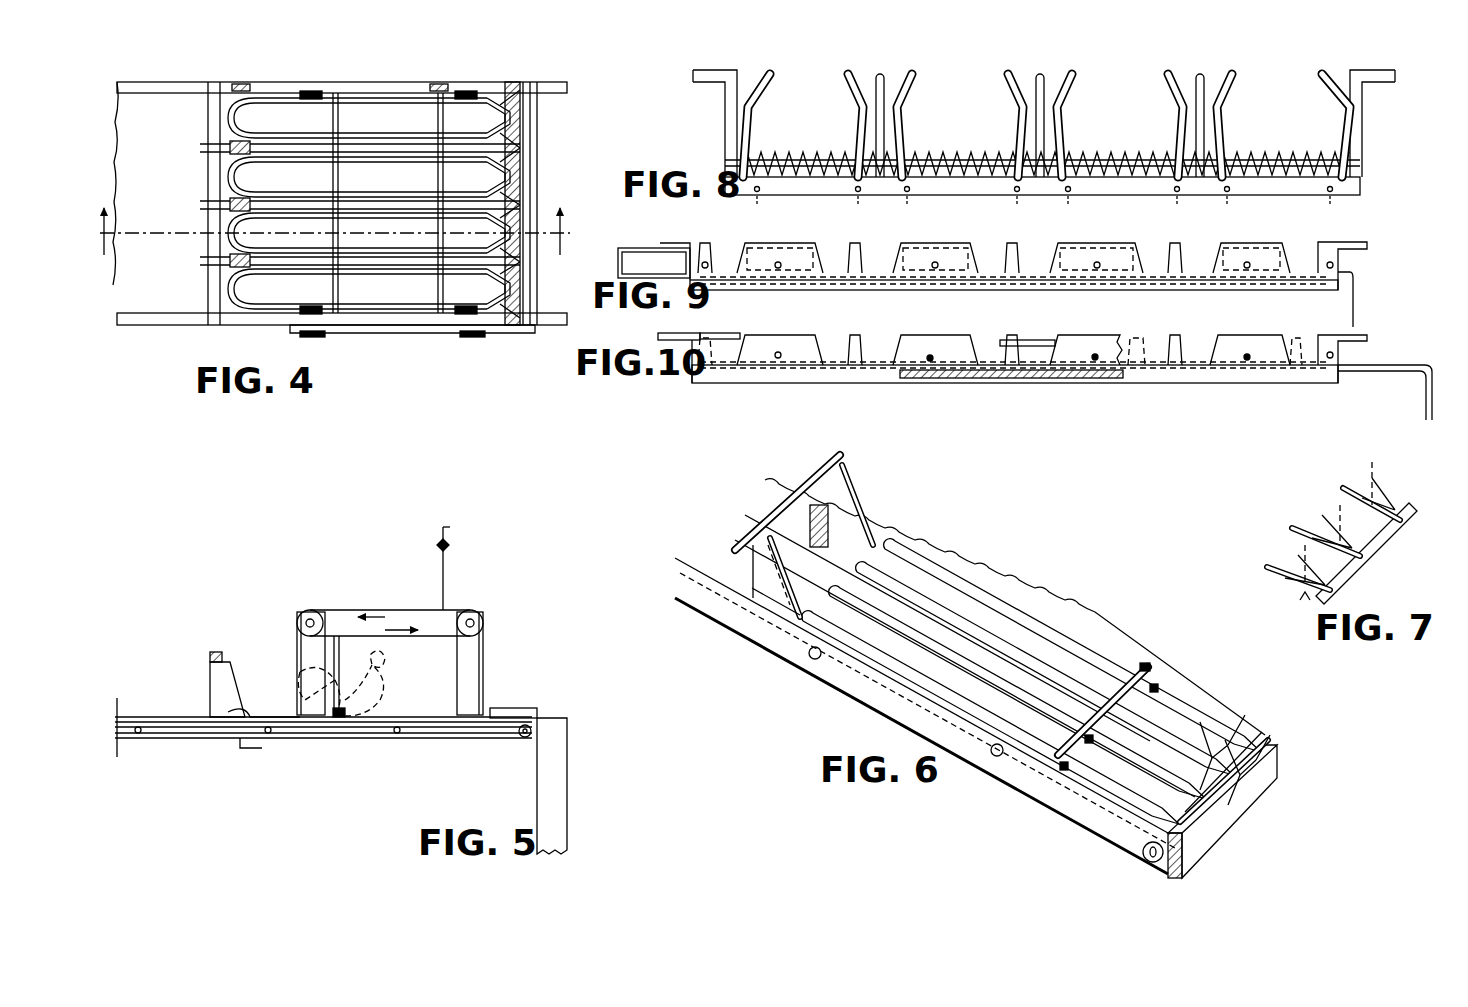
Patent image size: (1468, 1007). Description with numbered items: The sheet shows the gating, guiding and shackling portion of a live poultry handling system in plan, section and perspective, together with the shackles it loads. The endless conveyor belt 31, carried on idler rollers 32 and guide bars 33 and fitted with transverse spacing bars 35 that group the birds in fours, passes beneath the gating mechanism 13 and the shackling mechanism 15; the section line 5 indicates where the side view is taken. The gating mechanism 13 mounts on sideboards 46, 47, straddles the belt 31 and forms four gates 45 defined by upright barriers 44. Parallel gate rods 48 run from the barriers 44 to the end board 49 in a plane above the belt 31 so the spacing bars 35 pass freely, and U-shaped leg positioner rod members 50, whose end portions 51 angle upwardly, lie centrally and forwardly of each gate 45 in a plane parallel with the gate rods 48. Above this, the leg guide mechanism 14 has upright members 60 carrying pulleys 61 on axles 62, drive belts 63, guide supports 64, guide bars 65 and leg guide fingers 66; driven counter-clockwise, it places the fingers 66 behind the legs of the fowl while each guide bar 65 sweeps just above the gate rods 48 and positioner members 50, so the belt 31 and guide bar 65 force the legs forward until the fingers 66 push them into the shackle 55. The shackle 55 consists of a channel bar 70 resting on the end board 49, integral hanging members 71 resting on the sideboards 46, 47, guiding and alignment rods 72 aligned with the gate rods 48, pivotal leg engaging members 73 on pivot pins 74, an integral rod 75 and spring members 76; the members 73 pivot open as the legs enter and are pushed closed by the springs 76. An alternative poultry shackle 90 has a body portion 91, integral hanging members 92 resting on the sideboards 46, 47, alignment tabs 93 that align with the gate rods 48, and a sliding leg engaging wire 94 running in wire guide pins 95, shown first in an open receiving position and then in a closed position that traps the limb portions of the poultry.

In FIG. 4, the section line 5- 5 is at (333, 244).
In FIG. 4, the gating mechanism 13 is at (203, 296).
In FIG. 5, the gating mechanism 13 is at (220, 650).
In FIG. 6, the gating mechanism 13 is at (870, 508).
In FIG. 5, the leg guide mechanism 14 is at (454, 577).
In FIG. 6, the leg guide mechanism 14 is at (1125, 665).
In FIG. 4, the shackling mechanism 15 is at (532, 170).
In FIG. 5, the shackling mechanism 15 is at (553, 708).
In FIG. 6, the shackling mechanism 15 is at (1258, 730).
In FIG. 6, the endless conveyor belt 31 is at (690, 612).
In FIG. 6, the idler rollers 32 is at (1143, 855).
In FIG. 6, the guide bars 33 is at (808, 657).
In FIG. 6, the transverse spacing bars 35 is at (1000, 598).
In FIG. 4, the upright barriers 44 is at (240, 142).
In FIG. 6, the upright barriers 44 is at (845, 470).
In FIG. 4, the gates 45 is at (200, 100).
In FIG. 5, the gates 45 is at (204, 688).
In FIG. 6, the gates 45 is at (775, 525).
In FIG. 4, the sideboard 46 is at (270, 320).
In FIG. 4, the sideboard 47 is at (275, 85).
In FIG. 5, the sideboard 47 is at (340, 728).
In FIG. 4, the gate rods 48 is at (393, 150).
In FIG. 6, the gate rods 48 is at (925, 590).
In FIG. 4, the end board 49 is at (535, 133).
In FIG. 6, the end board 49 is at (1275, 783).
In FIG. 4, the leg positioner rod members 50 is at (226, 117).
In FIG. 5, the leg positioner rod members 50 is at (232, 712).
In FIG. 6, the leg positioner rod members 50 is at (890, 575).
In FIG. 5, the end portions 51 is at (250, 738).
In FIG. 6, the end portions 51 is at (817, 520).
In FIG. 8, the shackle 55 is at (1285, 72).
In FIG. 5, the shackle 55 is at (502, 712).
In FIG. 6, the shackle 55 is at (1268, 738).
In FIG. 5, the upright members 60 is at (305, 652).
In FIG. 5, the pulleys 61 is at (314, 620).
In FIG. 5, the axles 62 is at (299, 619).
In FIG. 5, the drive belts 63 is at (395, 610).
In FIG. 5, the guide supports 64 is at (447, 596).
In FIG. 5, the guide bars 65 is at (449, 545).
In FIG. 6, the guide bars 65 is at (1149, 666).
In FIG. 5, the leg guide fingers 66 is at (443, 530).
In FIG. 6, the leg guide fingers 66 is at (1160, 688).
In FIG. 8, the channel bar 70 is at (1362, 188).
In FIG. 6, the channel bar 70 is at (1225, 775).
In FIG. 7, the channel bar 70 is at (1370, 560).
In FIG. 8, the hanging members 71 is at (720, 72).
In FIG. 8, the guiding and alignment rods 72 is at (880, 74).
In FIG. 6, the guiding and alignment rods 72 is at (1200, 720).
In FIG. 7, the guiding and alignment rods 72 is at (1294, 530).
In FIG. 8, the pivotal leg engaging members 73 is at (762, 87).
In FIG. 6, the pivotal leg engaging members 73 is at (1230, 726).
In FIG. 7, the pivotal leg engaging members 73 is at (1355, 478).
In FIG. 8, the pivot pins 74 is at (757, 200).
In FIG. 8, the integral rod 75 is at (1362, 162).
In FIG. 8, the spring members 76 is at (822, 150).
In FIG. 9, the poultry shackle 90 is at (1348, 236).
In FIG. 10, the poultry shackle 90 is at (830, 386).
In FIG. 9, the body portion 91 is at (990, 291).
In FIG. 10, the body portion 91 is at (870, 384).
In FIG. 9, the hanging members 92 is at (660, 244).
In FIG. 10, the hanging members 92 is at (658, 336).
In FIG. 9, the alignment tabs 93 is at (856, 244).
In FIG. 10, the alignment tabs 93 is at (856, 336).
In FIG. 10, the sliding leg engaging wire 94 is at (722, 334).
In FIG. 9, the wire guide pins 95 is at (705, 262).
In FIG. 10, the wire guide pins 95 is at (778, 352).